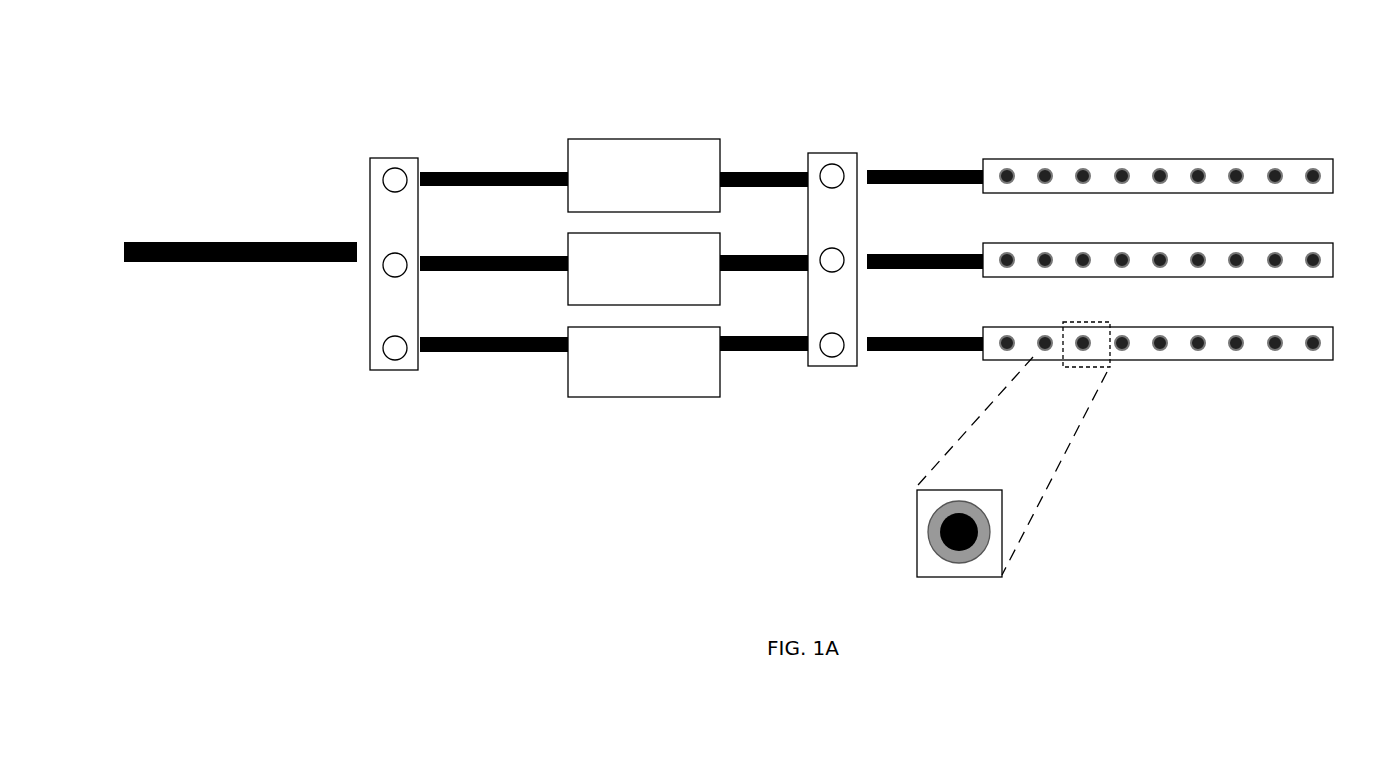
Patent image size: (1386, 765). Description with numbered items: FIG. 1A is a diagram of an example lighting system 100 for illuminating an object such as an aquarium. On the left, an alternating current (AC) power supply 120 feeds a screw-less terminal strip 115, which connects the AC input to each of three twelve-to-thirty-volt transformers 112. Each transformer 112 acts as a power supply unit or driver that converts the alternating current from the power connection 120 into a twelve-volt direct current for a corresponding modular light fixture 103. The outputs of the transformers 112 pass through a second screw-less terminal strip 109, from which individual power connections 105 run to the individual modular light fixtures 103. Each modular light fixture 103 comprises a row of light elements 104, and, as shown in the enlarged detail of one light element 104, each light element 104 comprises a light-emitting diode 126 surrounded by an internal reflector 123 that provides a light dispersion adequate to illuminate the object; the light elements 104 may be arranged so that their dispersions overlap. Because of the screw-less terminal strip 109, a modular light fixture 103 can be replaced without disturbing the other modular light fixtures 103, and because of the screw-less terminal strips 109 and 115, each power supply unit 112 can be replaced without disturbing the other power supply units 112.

The lighting system 100 is at (820, 42).
The alternating current (AC) power supply 120 is at (240, 263).
The screw-less terminal strip 115 is at (380, 372).
The 12 to 30-volt transformer 112 is at (613, 139).
The screw-less terminal strip 109 is at (833, 368).
The power connection 105 is at (943, 184).
The modular light fixture 103 is at (1283, 158).
The light element 104 is at (1124, 170).
The internal reflector 123 is at (985, 530).
The light-emitting diode 126 is at (978, 540).